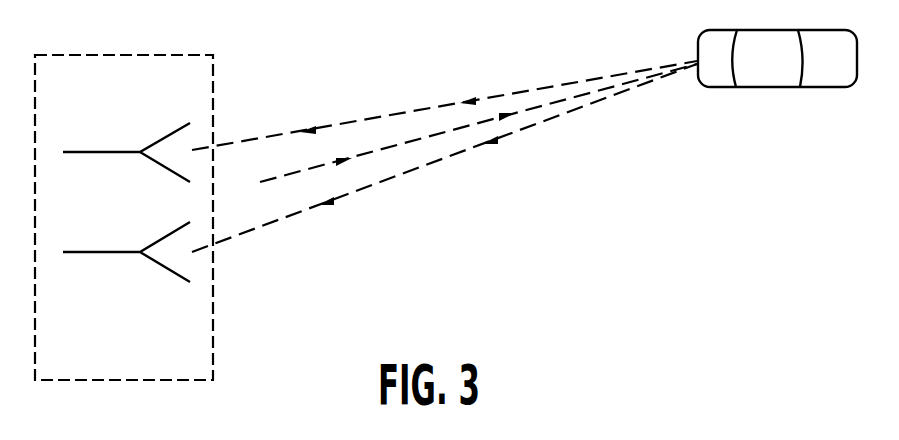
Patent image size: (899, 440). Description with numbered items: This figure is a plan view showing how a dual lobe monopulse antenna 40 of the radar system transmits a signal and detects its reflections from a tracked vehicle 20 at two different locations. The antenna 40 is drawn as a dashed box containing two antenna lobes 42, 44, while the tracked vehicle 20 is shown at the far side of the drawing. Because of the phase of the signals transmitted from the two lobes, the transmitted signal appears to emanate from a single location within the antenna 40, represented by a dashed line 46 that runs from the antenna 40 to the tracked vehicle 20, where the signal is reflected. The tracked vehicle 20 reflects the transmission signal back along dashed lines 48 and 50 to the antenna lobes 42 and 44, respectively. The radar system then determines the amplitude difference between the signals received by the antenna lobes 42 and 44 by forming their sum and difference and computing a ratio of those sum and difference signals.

The tracked vehicle 20 is at (780, 87).
The dual lobe monopulse antenna 40 is at (213, 363).
The antenna lobe 42 is at (110, 252).
The antenna lobe 44 is at (108, 152).
The dashed line 46 is at (393, 146).
The dashed line 48 is at (507, 135).
The dashed line 50 is at (488, 98).